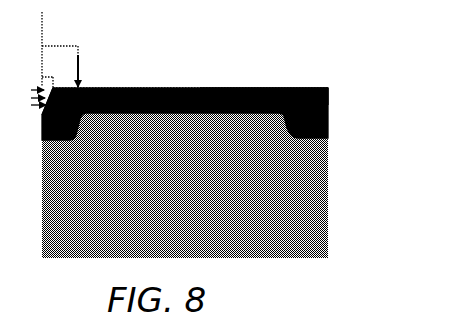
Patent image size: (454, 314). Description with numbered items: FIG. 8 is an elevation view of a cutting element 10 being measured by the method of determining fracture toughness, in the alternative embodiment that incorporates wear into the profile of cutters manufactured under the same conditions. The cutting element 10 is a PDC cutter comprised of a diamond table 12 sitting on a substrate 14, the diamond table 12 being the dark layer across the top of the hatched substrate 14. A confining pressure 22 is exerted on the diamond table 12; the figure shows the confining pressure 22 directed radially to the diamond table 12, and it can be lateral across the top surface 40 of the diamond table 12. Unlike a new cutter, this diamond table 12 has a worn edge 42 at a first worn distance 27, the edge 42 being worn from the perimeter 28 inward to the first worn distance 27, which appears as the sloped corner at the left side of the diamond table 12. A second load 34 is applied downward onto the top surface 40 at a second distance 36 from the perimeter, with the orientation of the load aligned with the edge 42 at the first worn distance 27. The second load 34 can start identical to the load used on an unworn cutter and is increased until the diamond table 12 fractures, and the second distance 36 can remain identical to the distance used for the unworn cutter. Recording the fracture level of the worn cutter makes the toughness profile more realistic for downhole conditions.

The cutting element 10 is at (166, 88).
The diamond table 12 is at (328, 122).
The substrate 14 is at (295, 202).
The confining pressure 22 is at (26, 97).
The first worn distance 27 is at (52, 77).
The perimeter 28 is at (330, 89).
The second load 34 is at (90, 68).
The second distance 36 is at (57, 46).
The top surface 40 is at (265, 88).
The worn edge 42 is at (40, 111).